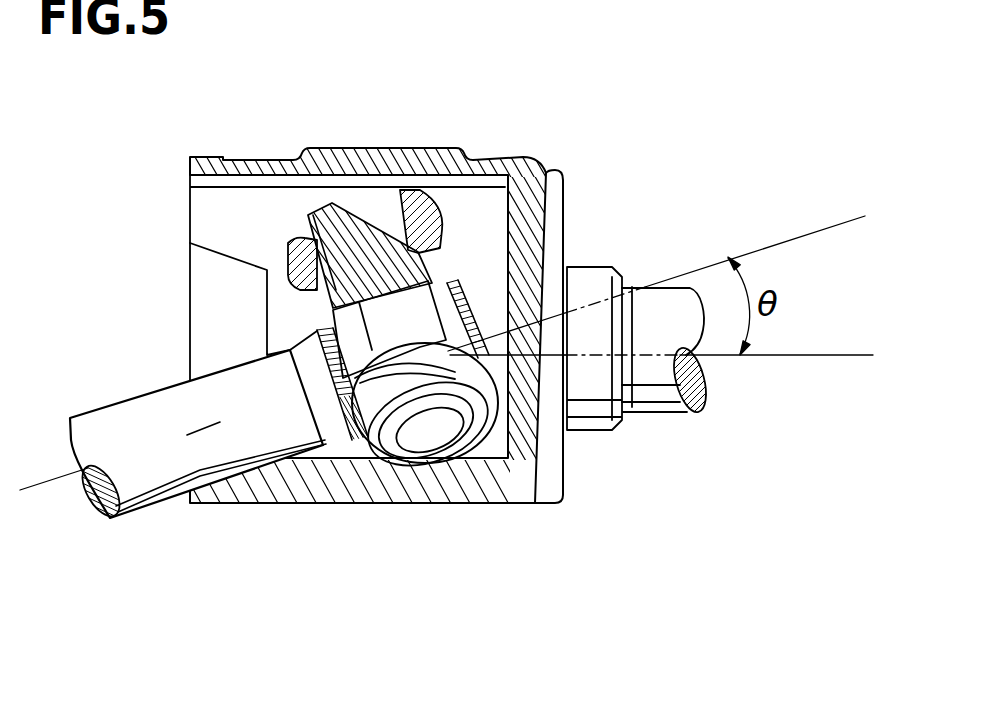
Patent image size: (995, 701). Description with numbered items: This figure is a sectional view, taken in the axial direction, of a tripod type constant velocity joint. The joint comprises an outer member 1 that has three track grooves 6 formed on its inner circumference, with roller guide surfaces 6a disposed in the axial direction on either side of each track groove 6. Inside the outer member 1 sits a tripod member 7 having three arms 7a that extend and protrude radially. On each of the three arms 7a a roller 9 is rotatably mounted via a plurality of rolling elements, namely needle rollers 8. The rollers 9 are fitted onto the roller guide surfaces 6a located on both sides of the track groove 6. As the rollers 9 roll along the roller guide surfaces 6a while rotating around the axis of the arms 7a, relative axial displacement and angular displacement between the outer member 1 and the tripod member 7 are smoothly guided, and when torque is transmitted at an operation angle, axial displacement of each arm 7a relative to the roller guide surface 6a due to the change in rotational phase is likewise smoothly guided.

The outer member 1 is at (562, 177).
The track groove 6 is at (478, 200).
The roller guide surface 6a is at (212, 221).
The tripod member 7 is at (436, 313).
The arm 7a is at (333, 217).
The needle roller 8 is at (390, 222).
The roller 9 is at (412, 200).